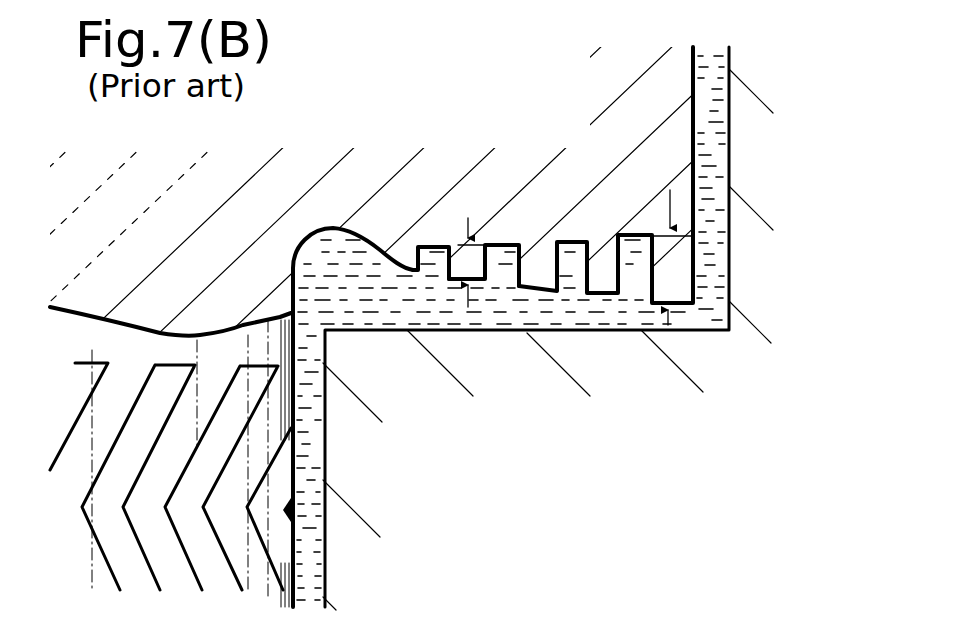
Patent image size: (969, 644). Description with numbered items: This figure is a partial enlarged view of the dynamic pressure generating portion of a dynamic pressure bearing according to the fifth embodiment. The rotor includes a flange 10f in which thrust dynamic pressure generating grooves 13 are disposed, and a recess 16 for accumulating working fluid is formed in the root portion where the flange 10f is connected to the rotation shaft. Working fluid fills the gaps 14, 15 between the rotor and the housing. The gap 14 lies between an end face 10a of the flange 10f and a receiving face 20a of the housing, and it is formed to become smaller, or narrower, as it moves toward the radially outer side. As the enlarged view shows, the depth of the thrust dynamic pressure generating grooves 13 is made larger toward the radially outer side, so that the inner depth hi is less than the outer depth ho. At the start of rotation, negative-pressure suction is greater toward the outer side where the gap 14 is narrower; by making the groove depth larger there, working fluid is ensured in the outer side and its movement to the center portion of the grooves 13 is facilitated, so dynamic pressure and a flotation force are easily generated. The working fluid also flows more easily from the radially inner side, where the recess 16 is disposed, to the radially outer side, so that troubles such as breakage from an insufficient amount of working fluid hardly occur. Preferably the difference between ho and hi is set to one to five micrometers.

The flange 10f is at (683, 92).
The gap 15 is at (717, 185).
The recess 16 is at (337, 230).
The thrust dynamic pressure generating grooves 13 is at (432, 260).
The receiving face 20a is at (493, 323).
The end face 10a is at (530, 280).
The gap 14 is at (555, 310).
The groove depth in the inner side hi is at (468, 265).
The groove depth in the outer side ho is at (672, 257).